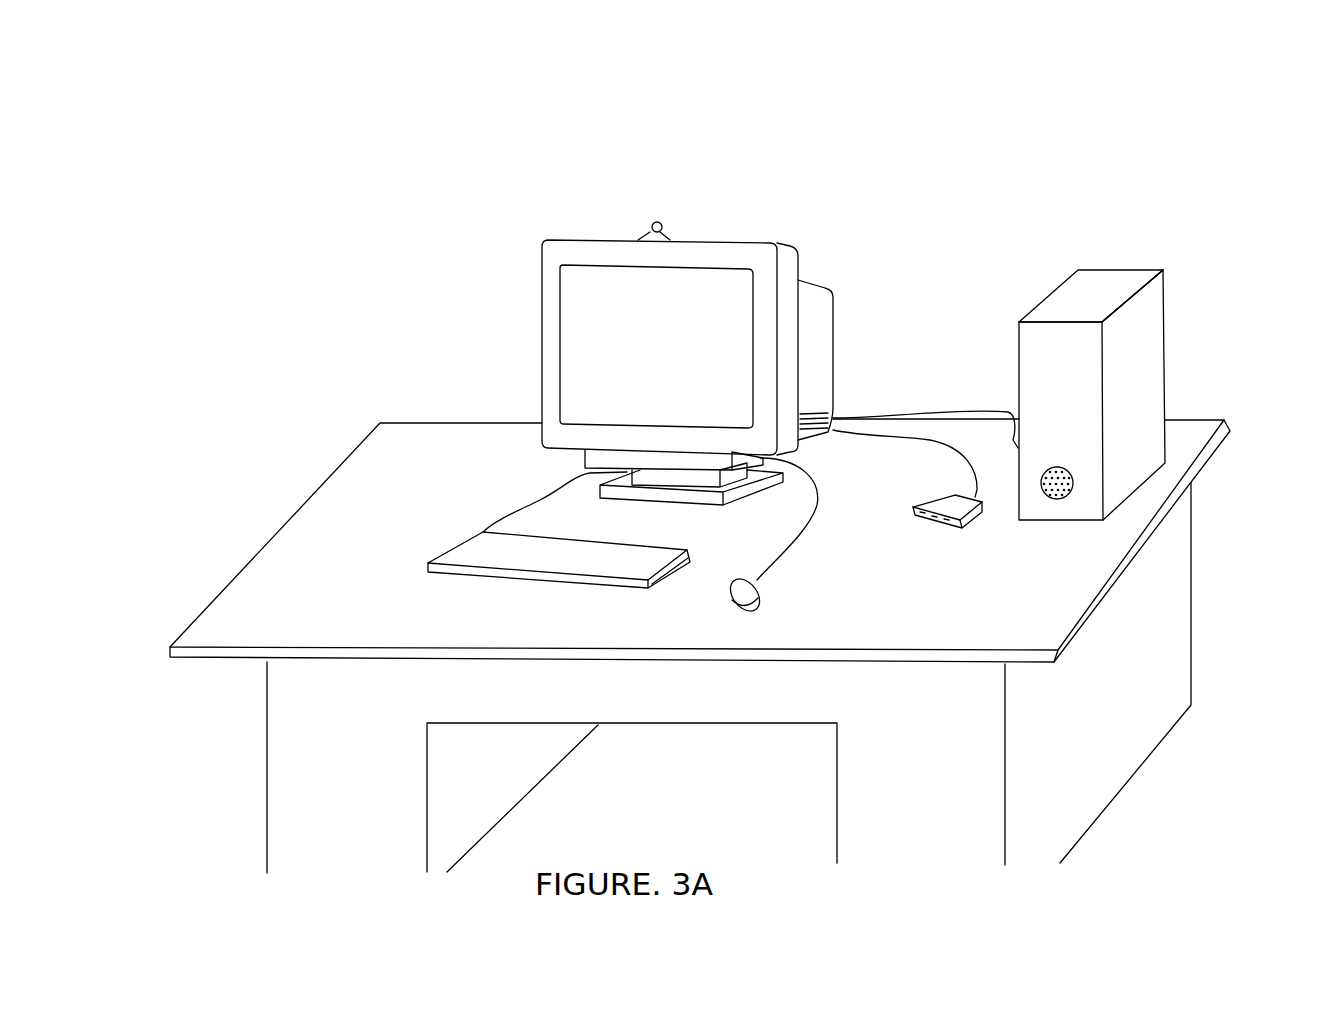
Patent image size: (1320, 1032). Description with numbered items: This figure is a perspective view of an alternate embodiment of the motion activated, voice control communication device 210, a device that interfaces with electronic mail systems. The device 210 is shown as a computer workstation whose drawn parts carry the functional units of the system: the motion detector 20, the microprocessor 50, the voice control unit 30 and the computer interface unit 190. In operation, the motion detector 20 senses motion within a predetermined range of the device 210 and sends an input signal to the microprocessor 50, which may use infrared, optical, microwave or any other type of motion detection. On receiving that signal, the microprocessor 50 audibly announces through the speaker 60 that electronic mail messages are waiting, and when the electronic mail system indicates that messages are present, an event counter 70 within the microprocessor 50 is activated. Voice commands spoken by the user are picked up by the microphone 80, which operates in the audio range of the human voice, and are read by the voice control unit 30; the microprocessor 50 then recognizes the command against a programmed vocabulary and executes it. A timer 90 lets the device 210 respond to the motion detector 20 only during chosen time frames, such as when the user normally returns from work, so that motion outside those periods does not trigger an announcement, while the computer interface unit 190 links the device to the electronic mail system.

The motion detector 20 is at (937, 507).
The voice control unit 30 is at (1028, 352).
The microprocessor 50 is at (1107, 295).
The speaker 60 is at (1055, 499).
The event counter 70 is at (1065, 302).
The microphone 80 is at (660, 221).
The timer 90 is at (1143, 347).
The computer interface unit 190 is at (1178, 384).
The motion activated, voice control communication device 210 is at (961, 82).